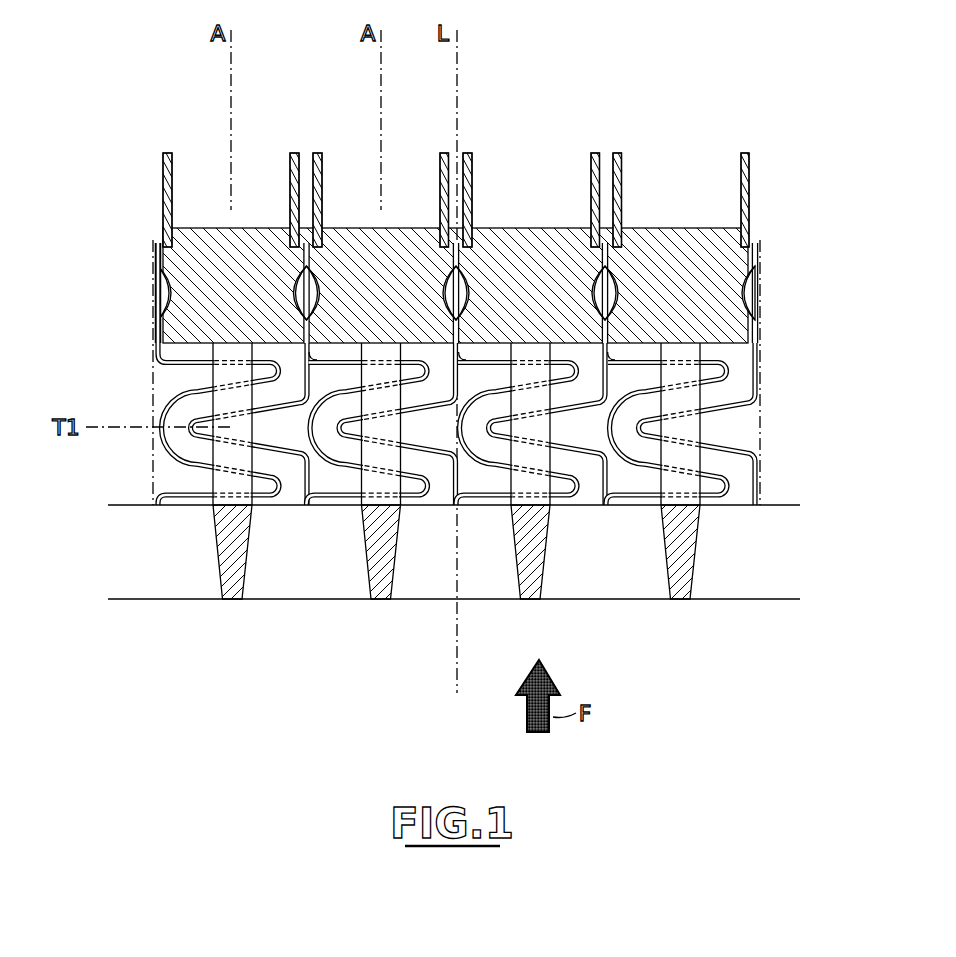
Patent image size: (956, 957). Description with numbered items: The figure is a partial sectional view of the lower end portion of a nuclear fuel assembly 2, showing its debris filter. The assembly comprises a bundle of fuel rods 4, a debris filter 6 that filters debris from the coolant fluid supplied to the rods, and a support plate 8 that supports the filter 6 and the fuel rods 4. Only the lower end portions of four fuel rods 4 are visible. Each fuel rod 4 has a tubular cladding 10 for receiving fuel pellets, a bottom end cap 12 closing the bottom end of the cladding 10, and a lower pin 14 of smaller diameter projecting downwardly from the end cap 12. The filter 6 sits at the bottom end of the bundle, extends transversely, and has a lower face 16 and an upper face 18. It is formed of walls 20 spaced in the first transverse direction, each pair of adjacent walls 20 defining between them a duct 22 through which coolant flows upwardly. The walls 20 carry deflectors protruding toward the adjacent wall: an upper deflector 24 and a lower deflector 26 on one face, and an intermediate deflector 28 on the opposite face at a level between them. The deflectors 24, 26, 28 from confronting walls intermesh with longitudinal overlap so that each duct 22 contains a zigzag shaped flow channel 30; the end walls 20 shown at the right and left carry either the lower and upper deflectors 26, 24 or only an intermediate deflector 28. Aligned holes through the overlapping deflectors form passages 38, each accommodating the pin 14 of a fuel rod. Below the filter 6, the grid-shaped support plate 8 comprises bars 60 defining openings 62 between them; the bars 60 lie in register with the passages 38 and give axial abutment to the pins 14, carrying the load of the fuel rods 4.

The nuclear fuel assembly 2 is at (544, 94).
The fuel rods 4 is at (352, 166).
The debris filter 6 is at (128, 264).
The support plate 8 is at (222, 604).
The tubular cladding 10 is at (161, 162).
The bottom end cap 12 is at (196, 233).
The lower pin 14 is at (249, 498).
The lower face 16 is at (762, 507).
The upper face 18 is at (757, 242).
The walls 20 is at (148, 293).
The duct 22 is at (329, 355).
The upper deflector 24 is at (168, 365).
The lower deflector 26 is at (170, 493).
The intermediate deflector 28 is at (754, 468).
The zigzag shaped flow channel 30 is at (331, 417).
The passages 38 is at (198, 499).
The bars 60 is at (218, 556).
The openings 62 is at (265, 597).